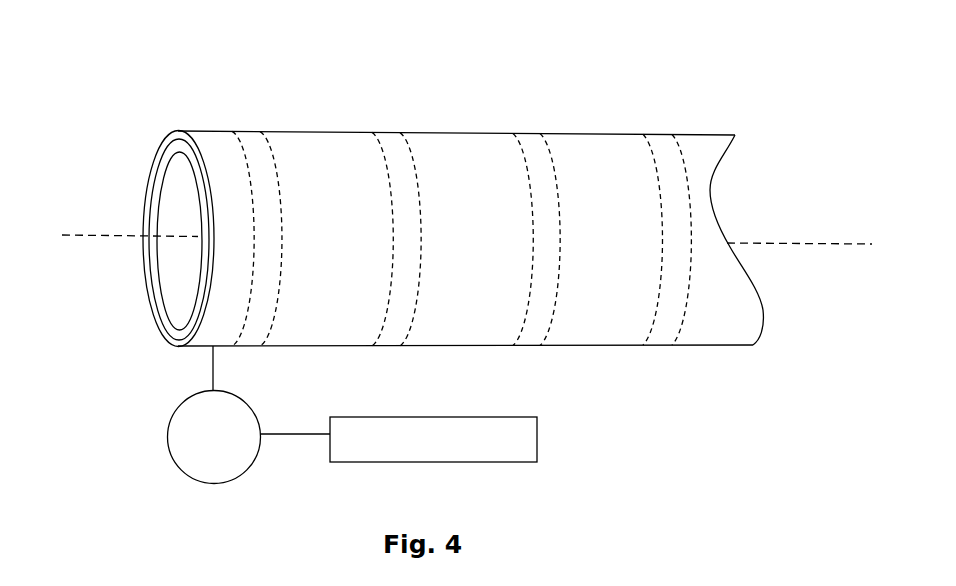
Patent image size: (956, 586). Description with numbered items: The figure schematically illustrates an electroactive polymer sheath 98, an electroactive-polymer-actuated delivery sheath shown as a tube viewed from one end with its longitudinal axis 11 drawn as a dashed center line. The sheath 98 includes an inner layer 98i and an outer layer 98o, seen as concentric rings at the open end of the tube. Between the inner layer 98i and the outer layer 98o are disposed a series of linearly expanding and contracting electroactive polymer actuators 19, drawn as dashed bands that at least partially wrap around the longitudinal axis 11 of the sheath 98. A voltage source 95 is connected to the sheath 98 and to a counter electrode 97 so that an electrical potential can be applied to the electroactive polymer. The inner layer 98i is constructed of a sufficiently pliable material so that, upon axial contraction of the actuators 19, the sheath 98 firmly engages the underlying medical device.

The electroactive polymer sheath 98 is at (322, 108).
The outer layer 98o is at (176, 131).
The inner layer 98i is at (176, 332).
The longitudinal axis 11 is at (72, 235).
The electroactive polymer actuators 19 is at (248, 131).
The voltage source 95 is at (168, 432).
The counter electrode 97 is at (537, 440).